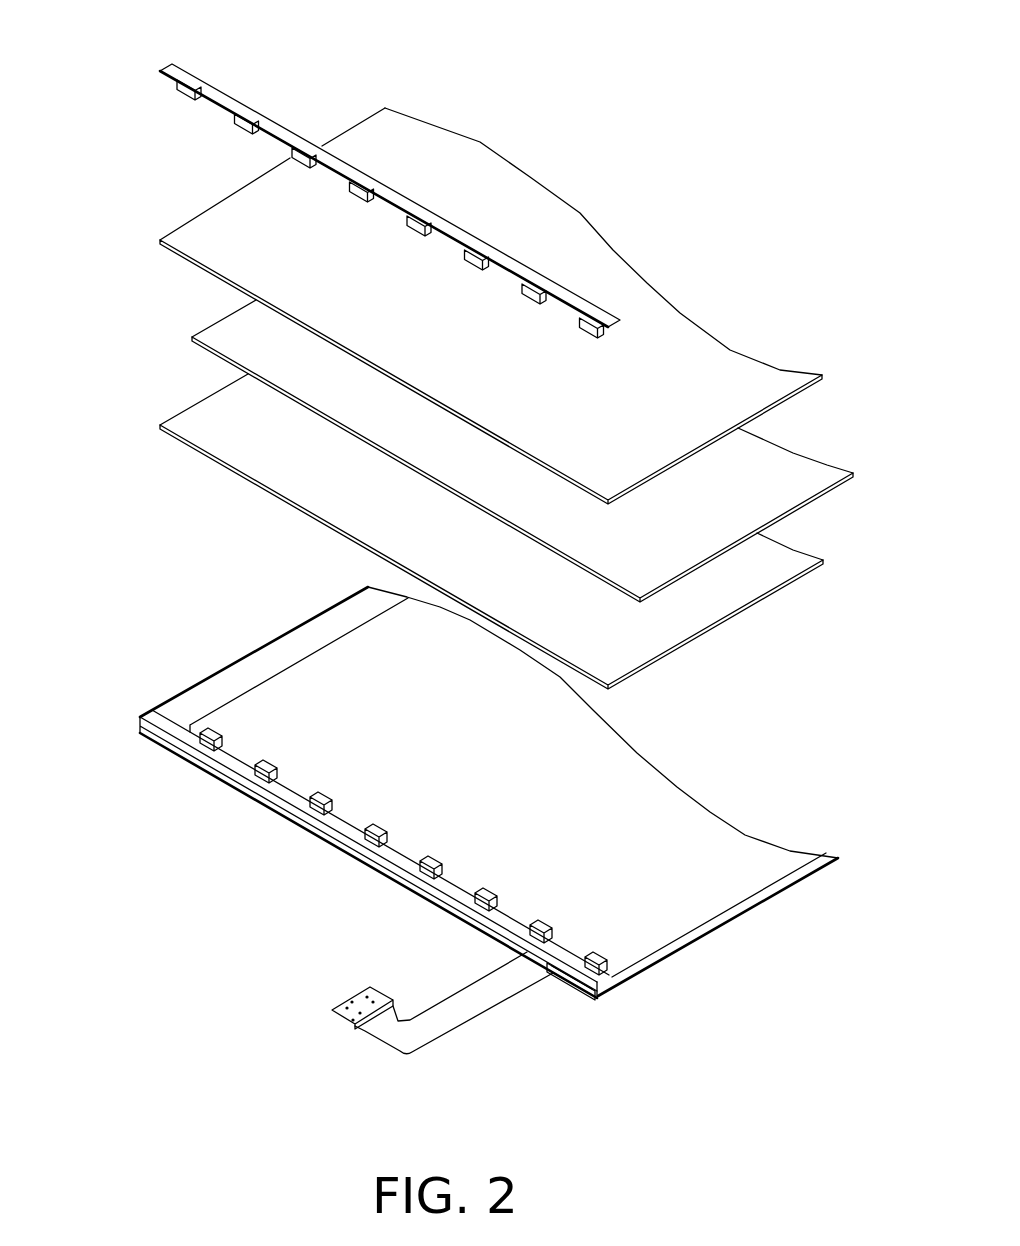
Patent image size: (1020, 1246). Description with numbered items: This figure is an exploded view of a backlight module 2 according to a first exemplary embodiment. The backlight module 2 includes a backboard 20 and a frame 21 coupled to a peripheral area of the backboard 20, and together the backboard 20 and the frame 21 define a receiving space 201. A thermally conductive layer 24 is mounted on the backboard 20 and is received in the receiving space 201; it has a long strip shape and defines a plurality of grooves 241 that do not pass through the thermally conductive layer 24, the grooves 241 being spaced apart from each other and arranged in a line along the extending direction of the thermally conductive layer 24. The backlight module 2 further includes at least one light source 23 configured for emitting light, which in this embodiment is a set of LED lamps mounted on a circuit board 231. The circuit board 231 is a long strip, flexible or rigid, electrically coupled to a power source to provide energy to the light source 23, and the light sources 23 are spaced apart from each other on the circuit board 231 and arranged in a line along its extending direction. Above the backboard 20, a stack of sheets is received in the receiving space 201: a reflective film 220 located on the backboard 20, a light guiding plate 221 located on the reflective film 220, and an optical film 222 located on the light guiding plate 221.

The backlight module 2 is at (570, 53).
The backboard 20 is at (471, 820).
The receiving space 201 is at (300, 680).
The frame 21 is at (190, 760).
The reflective film 220 is at (200, 418).
The light guiding plate 221 is at (223, 333).
The optical film 222 is at (200, 227).
The light source 23 is at (590, 328).
The circuit board 231 is at (515, 267).
The thermally conductive layer 24 is at (468, 1003).
The groove 241 is at (550, 973).